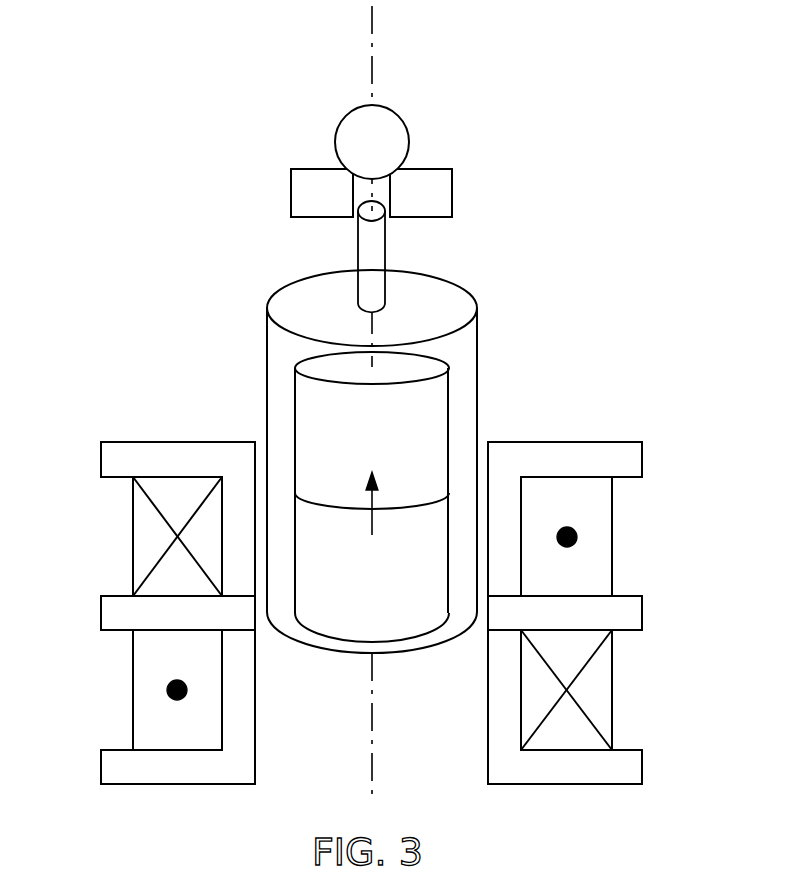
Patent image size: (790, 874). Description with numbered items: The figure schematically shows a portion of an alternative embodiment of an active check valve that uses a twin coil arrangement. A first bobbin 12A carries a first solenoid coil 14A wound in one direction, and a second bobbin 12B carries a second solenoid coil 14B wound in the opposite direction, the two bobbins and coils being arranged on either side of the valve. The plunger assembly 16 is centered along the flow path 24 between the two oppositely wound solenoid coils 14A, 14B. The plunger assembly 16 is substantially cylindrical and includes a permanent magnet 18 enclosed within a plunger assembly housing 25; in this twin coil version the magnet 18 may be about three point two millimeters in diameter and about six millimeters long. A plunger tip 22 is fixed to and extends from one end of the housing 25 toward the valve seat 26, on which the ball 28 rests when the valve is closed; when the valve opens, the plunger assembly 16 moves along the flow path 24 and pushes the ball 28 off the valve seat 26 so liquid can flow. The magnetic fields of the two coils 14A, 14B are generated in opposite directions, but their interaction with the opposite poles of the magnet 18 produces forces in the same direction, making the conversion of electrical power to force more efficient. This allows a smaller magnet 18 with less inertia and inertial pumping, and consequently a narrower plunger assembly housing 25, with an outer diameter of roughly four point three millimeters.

The first bobbin 12A is at (177, 785).
The second bobbin 12B is at (177, 441).
The first solenoid coil 14A is at (130, 698).
The second solenoid coil 14B is at (130, 553).
The plunger assembly 16 is at (303, 270).
The permanent magnet 18 is at (328, 644).
The plunger tip 22 is at (386, 253).
The flow path 24 is at (373, 36).
The plunger assembly housing 25 is at (458, 618).
The valve seat 26 is at (298, 168).
The ball 28 is at (407, 127).